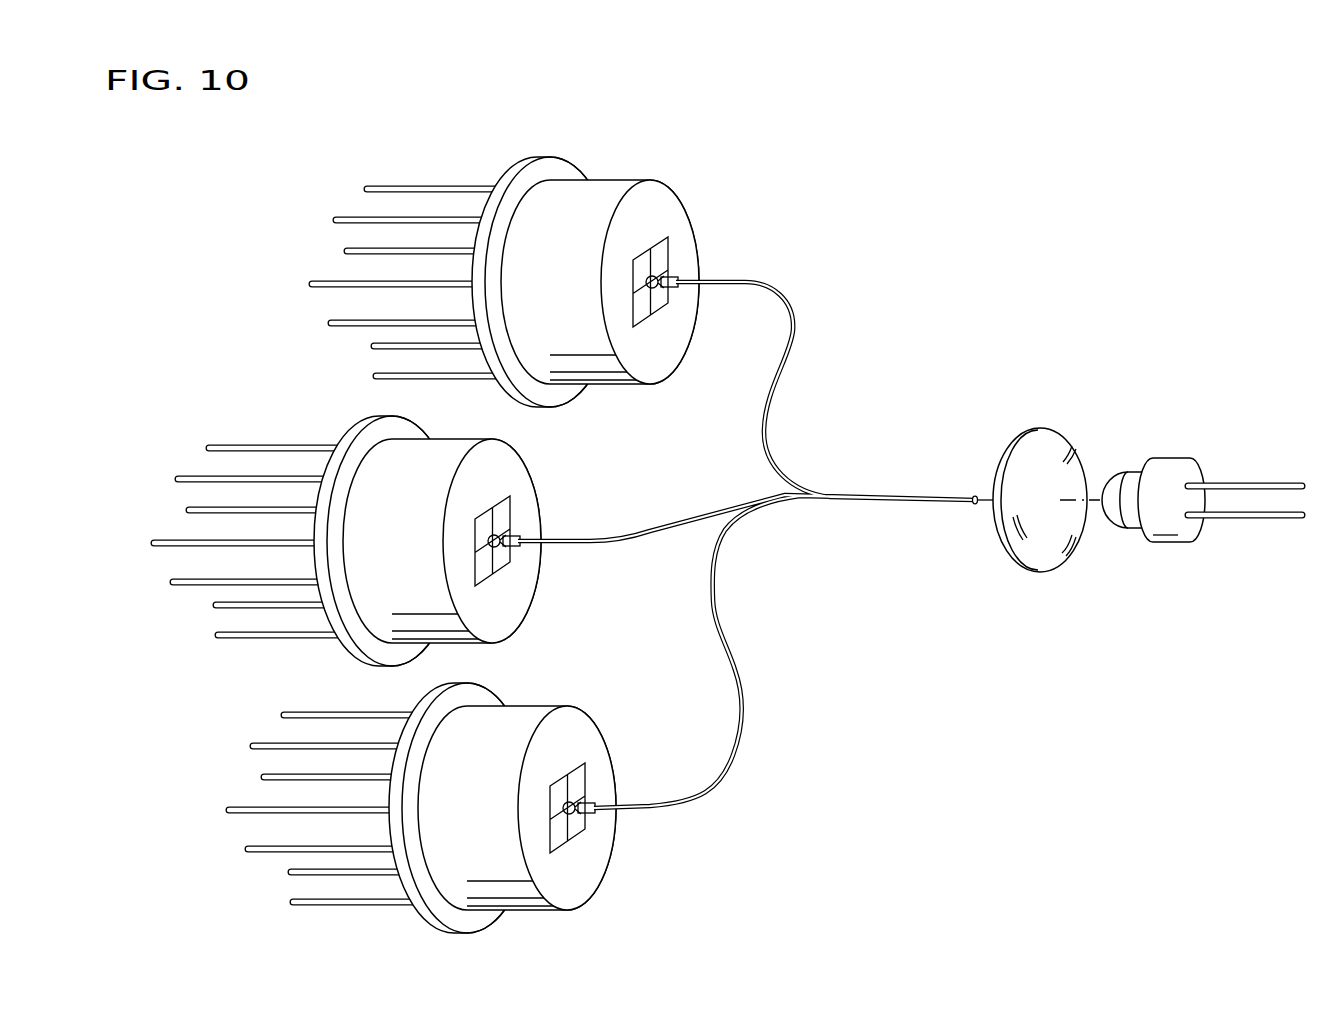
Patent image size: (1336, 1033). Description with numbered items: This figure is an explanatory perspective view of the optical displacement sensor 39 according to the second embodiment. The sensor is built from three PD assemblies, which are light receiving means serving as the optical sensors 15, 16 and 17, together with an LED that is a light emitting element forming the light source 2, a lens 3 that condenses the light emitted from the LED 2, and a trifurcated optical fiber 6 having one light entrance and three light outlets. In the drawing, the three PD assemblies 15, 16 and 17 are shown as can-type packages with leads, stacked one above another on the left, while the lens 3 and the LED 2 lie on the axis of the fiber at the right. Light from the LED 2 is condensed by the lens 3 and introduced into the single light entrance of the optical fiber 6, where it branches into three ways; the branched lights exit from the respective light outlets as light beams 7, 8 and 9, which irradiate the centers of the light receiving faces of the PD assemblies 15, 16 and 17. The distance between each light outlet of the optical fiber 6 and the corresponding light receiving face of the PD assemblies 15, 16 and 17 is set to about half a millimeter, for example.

The light source 2 is at (1165, 462).
The lens 3 is at (1047, 437).
The trifurcated optical fiber 6 is at (720, 613).
The light beam 7 is at (690, 275).
The light beam 8 is at (530, 534).
The light beam 9 is at (605, 801).
The optical sensor 15 is at (532, 275).
The optical sensor 16 is at (374, 541).
The optical sensor 17 is at (444, 801).
The optical displacement sensor 39 is at (993, 297).